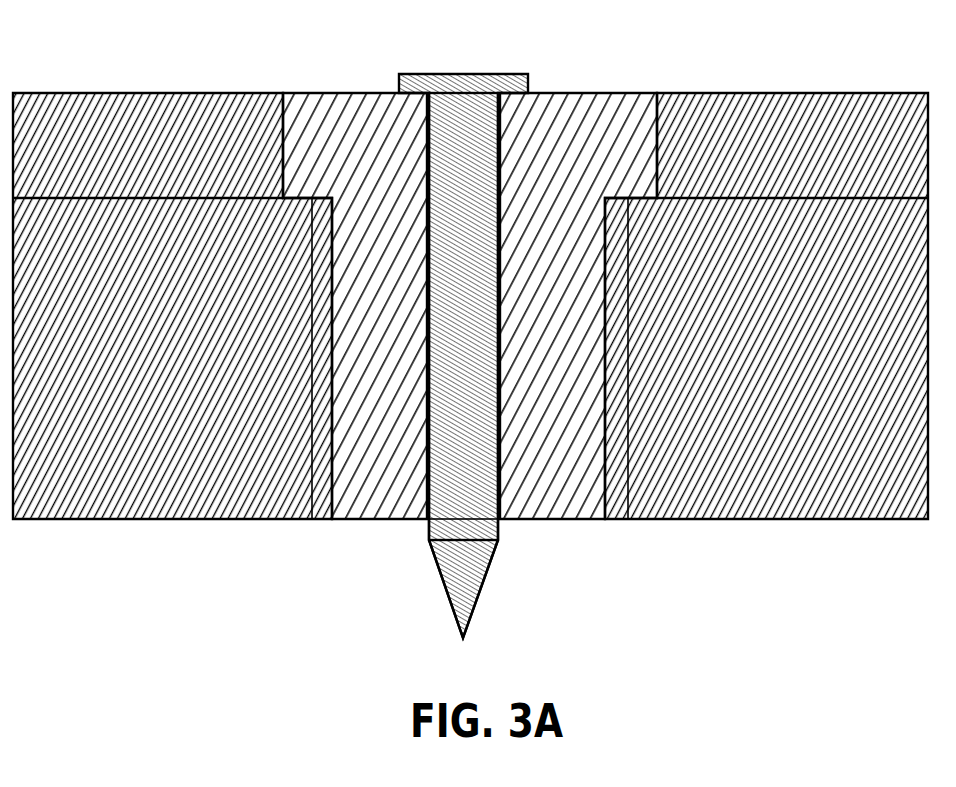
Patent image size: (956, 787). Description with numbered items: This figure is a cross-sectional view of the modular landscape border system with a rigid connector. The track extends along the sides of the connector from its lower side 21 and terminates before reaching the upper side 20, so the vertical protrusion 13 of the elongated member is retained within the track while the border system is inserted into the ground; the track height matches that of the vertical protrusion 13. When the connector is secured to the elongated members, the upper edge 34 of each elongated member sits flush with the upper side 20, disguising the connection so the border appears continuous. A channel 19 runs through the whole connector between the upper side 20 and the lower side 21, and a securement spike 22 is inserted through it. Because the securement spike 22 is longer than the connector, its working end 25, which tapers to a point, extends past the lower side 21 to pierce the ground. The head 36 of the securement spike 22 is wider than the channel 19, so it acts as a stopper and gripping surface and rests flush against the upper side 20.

The upper edge 34 is at (160, 93).
The upper side 20 is at (335, 93).
The head 36 is at (465, 74).
The securement spike 22 is at (476, 175).
The channel 19 is at (503, 272).
The vertical protrusion 13 is at (323, 518).
The lower side 21 is at (567, 519).
The working end 25 is at (473, 575).